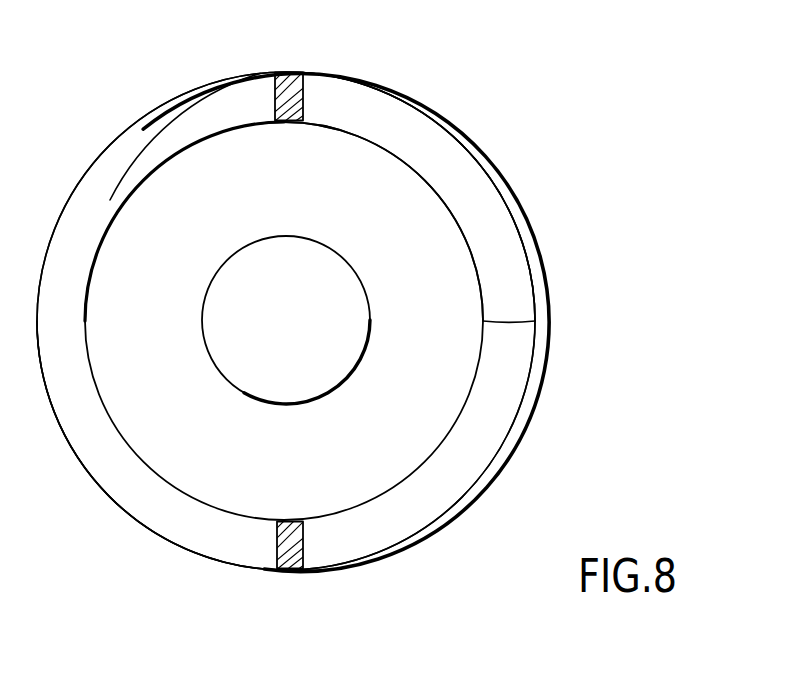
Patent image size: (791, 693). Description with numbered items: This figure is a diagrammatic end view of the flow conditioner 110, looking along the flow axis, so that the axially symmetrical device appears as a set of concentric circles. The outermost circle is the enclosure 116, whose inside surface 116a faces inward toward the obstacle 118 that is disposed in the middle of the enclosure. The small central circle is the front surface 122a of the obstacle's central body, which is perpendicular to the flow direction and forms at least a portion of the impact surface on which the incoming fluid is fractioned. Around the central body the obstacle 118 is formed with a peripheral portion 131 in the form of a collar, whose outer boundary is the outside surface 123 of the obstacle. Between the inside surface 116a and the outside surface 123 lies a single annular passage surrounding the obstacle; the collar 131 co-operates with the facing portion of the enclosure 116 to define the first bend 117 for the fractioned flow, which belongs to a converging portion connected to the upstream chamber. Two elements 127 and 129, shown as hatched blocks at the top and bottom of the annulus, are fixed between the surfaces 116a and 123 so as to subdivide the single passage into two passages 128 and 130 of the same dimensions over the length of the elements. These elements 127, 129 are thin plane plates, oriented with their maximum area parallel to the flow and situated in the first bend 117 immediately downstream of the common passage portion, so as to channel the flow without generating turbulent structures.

The flow conditioner 110 is at (467, 537).
The enclosure 116 is at (242, 72).
The inside surface of the enclosure 116a is at (190, 88).
The first bend 117 is at (498, 260).
The obstacle 118 is at (430, 407).
The front surface 122a is at (318, 307).
The outside surface of the obstacle 123 is at (432, 453).
The plate-shaped element 127 is at (303, 543).
The passage 128 is at (390, 125).
The plate-shaped element 129 is at (303, 97).
The passage 130 is at (208, 532).
The peripheral portion 131 is at (380, 188).